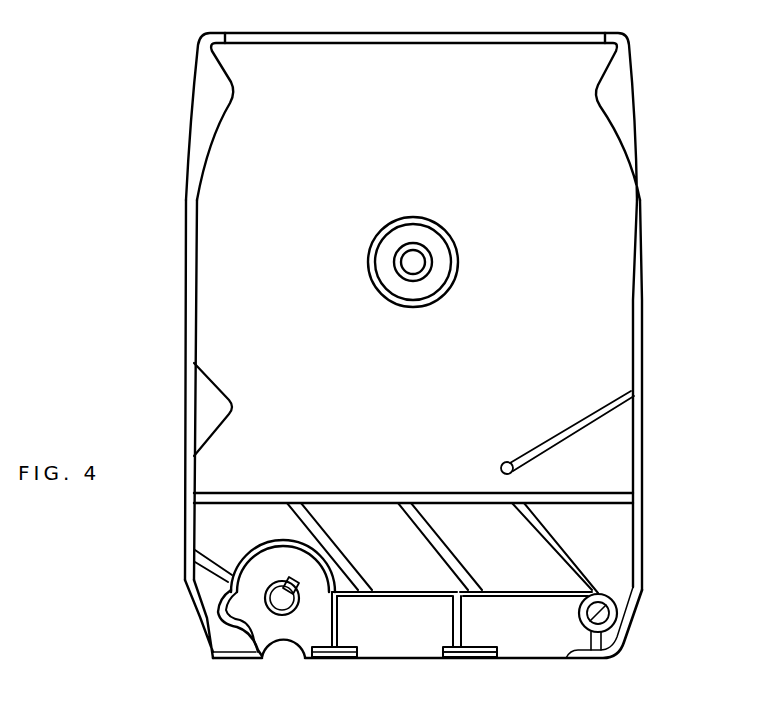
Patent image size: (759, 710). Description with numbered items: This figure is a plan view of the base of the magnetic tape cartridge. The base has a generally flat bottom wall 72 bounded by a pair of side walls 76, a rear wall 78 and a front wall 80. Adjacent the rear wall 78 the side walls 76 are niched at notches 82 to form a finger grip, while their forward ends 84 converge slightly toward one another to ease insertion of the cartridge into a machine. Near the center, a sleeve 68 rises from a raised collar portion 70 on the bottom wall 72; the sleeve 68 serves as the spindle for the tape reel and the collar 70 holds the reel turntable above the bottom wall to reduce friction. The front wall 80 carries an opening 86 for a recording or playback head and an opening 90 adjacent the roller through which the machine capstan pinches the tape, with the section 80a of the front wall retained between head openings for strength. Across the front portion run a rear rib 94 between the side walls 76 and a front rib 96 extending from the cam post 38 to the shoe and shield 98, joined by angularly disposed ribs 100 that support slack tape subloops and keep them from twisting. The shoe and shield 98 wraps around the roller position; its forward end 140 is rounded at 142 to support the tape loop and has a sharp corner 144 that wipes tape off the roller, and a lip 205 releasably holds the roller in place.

The cam post 38 is at (609, 598).
The sleeve 68 is at (427, 253).
The raised collar portion 70 is at (393, 228).
The bottom wall 72 is at (562, 267).
The side walls 76 is at (188, 289).
The rear wall 78 is at (485, 44).
The front wall 80 is at (448, 660).
The section of the front wall 80a is at (496, 695).
The notches 82 is at (207, 92).
The forward ends of the side walls 84 is at (202, 613).
The opening 86 is at (570, 660).
The opening 90 is at (280, 660).
The rear rib 94 is at (417, 502).
The front rib 96 is at (414, 590).
The shoe and shield 98 is at (278, 543).
The angularly disposed ribs 100 is at (541, 533).
The forward end of the shoe and shield 140 is at (230, 610).
The rounded outer surface 142 is at (223, 627).
The sharp corner 144 is at (252, 660).
The lip 205 is at (292, 580).